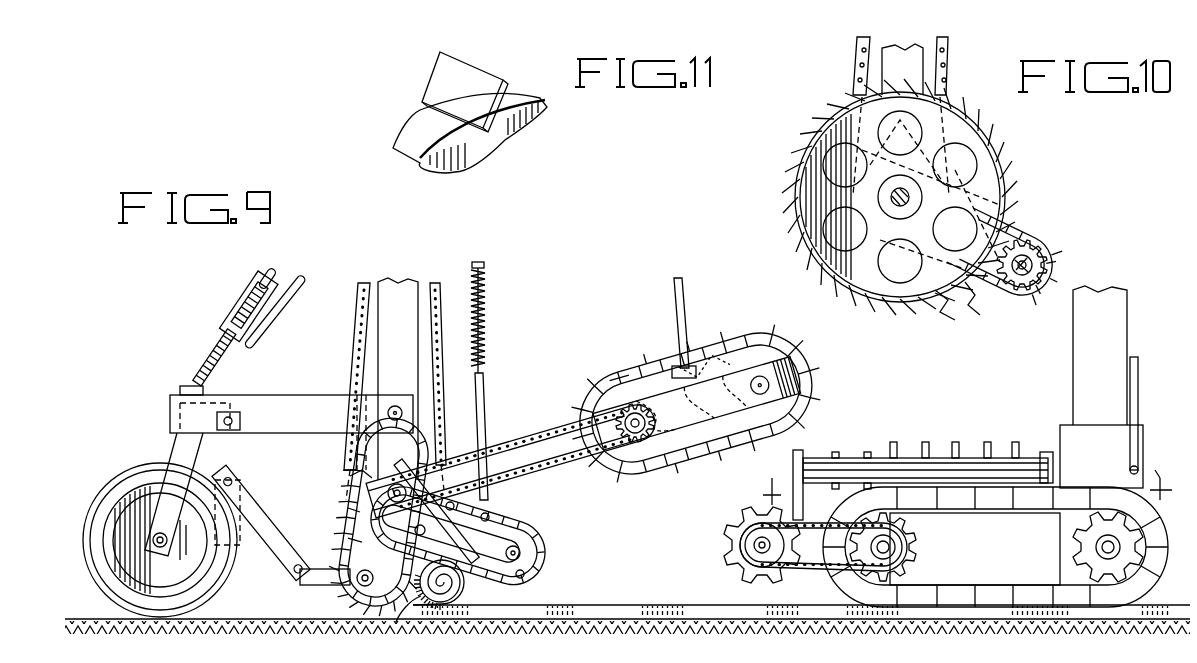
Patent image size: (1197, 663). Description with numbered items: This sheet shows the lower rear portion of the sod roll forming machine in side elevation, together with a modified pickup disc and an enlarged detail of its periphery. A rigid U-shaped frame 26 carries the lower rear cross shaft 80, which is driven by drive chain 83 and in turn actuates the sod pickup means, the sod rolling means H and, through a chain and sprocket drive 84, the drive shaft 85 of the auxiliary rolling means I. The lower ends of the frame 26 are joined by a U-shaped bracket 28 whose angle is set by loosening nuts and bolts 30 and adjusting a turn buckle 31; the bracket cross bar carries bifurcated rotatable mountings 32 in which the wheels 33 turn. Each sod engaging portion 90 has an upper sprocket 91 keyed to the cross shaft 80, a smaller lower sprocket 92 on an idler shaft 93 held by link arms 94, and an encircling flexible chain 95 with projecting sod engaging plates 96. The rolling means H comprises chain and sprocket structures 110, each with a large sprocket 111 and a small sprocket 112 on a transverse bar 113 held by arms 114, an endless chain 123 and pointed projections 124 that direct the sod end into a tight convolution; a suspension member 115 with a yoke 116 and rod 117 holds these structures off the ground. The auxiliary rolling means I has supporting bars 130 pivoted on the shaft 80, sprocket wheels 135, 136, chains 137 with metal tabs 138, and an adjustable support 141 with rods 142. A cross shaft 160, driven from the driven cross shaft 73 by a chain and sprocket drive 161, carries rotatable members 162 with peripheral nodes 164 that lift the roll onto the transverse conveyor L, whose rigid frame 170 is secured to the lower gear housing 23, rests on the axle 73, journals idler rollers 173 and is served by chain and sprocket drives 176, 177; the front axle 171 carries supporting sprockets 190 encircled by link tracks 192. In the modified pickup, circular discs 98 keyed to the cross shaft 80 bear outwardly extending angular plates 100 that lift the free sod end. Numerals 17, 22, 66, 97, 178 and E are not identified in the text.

In FIG. 9, the section line 17 is at (979, 483).
In FIG. 9, the machine body 22 is at (1112, 320).
In FIG. 9, the lower gear housing 23 is at (1167, 466).
In FIG. 9, the U-shaped frame 26 is at (406, 281).
In FIG. 9, the U-shaped bracket 28 is at (290, 396).
In FIG. 9, the nuts and bolts 30 is at (396, 406).
In FIG. 9, the turn buckle 31 is at (253, 291).
In FIG. 9, the bifurcated rotatable mountings 32 is at (183, 444).
In FIG. 9, the wheels 33 is at (112, 489).
In FIG. 9, the rod 66 is at (1138, 385).
In FIG. 9, the driven cross shaft 73 is at (910, 546).
In FIG. 9, the lower rear cross shaft 80 is at (354, 498).
In FIG. 10, the lower rear cross shaft 80 is at (888, 197).
In FIG. 9, the drive chain 83 is at (357, 326).
In FIG. 9, the chain and sprocket drive 84 is at (619, 445).
In FIG. 9, the drive shaft 85 is at (633, 409).
In FIG. 9, the sod engaging portions 90 is at (350, 527).
In FIG. 10, the sod engaging portions 90 is at (795, 170).
In FIG. 9, the upper sprocket 91 is at (352, 486).
In FIG. 9, the lower sprocket 92 is at (350, 540).
In FIG. 9, the idler shaft 93 is at (348, 592).
In FIG. 9, the link arms 94 is at (350, 512).
In FIG. 9, the flexible chain 95 is at (396, 622).
In FIG. 9, the sod engaging plates 96 is at (451, 533).
In FIG. 9, the strut 97 is at (275, 560).
In FIG. 10, the circular discs 98 is at (988, 180).
In FIG. 11, the circular discs 98 is at (498, 152).
In FIG. 10, the angular plates 100 is at (958, 290).
In FIG. 11, the angular plates 100 is at (440, 73).
In FIG. 9, the chain and sprocket structures 110 is at (546, 531).
In FIG. 9, the large sprocket 111 is at (487, 428).
In FIG. 9, the small sprocket 112 is at (546, 556).
In FIG. 9, the transverse bar 113 is at (520, 580).
In FIG. 10, the transverse bar 113 is at (1046, 258).
In FIG. 9, the arms 114 is at (494, 520).
In FIG. 9, the suspension member 115 is at (490, 313).
In FIG. 9, the yoke 116 is at (490, 392).
In FIG. 9, the rod 117 is at (484, 266).
In FIG. 9, the endless chain 123 is at (462, 582).
In FIG. 9, the pointed projections 124 is at (524, 526).
In FIG. 9, the supporting bars 130 is at (720, 450).
In FIG. 9, the sprocket wheels 135 is at (618, 379).
In FIG. 9, the sprocket wheels 136 is at (772, 351).
In FIG. 9, the chains 137 is at (716, 356).
In FIG. 9, the metal tabs 138 is at (800, 368).
In FIG. 9, the adjustable support 141 is at (672, 290).
In FIG. 9, the rods 142 is at (676, 308).
In FIG. 9, the cross shaft 160 is at (762, 558).
In FIG. 9, the chain and sprocket drive 161 is at (815, 574).
In FIG. 9, the rotatable members 162 is at (735, 565).
In FIG. 9, the nodes 164 is at (746, 500).
In FIG. 9, the rigid frame 170 is at (1053, 452).
In FIG. 9, the front axle 171 is at (1098, 548).
In FIG. 9, the idler rollers 173 is at (904, 465).
In FIG. 9, the chain and sprocket drive 176 is at (868, 452).
In FIG. 9, the chain and sprocket drive 177 is at (845, 443).
In FIG. 9, the bolt 178 is at (1000, 450).
In FIG. 9, the supporting sprockets 190 is at (1084, 535).
In FIG. 9, the link tracks 192 is at (1086, 490).
In FIG. 9, the ground surface E is at (620, 604).
In FIG. 9, the sod rolling means H is at (572, 541).
In FIG. 9, the auxiliary rolling means I is at (822, 384).
In FIG. 9, the transverse conveyor L is at (958, 445).